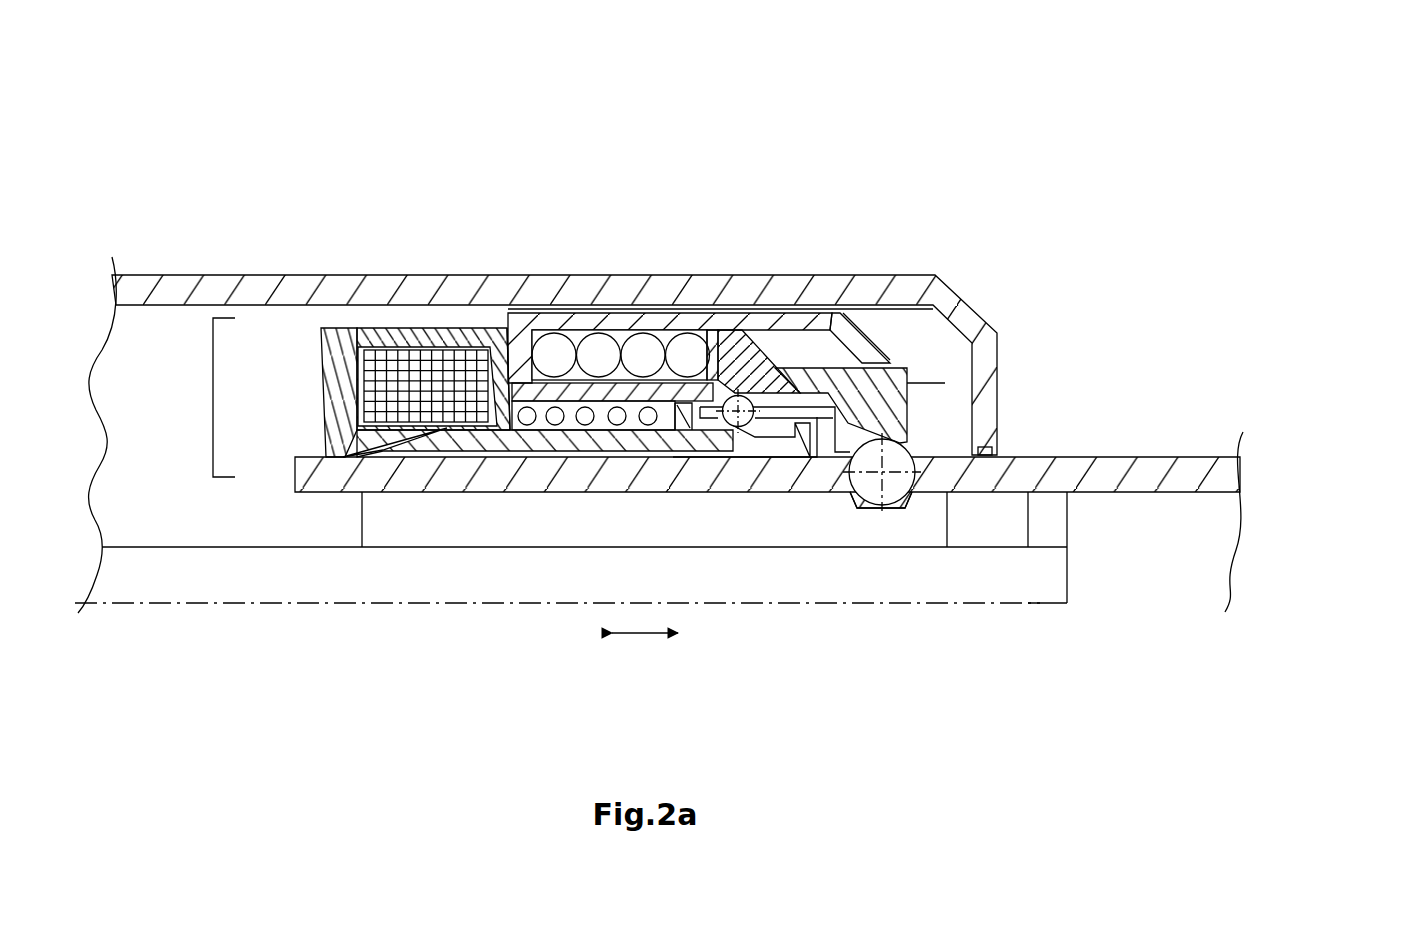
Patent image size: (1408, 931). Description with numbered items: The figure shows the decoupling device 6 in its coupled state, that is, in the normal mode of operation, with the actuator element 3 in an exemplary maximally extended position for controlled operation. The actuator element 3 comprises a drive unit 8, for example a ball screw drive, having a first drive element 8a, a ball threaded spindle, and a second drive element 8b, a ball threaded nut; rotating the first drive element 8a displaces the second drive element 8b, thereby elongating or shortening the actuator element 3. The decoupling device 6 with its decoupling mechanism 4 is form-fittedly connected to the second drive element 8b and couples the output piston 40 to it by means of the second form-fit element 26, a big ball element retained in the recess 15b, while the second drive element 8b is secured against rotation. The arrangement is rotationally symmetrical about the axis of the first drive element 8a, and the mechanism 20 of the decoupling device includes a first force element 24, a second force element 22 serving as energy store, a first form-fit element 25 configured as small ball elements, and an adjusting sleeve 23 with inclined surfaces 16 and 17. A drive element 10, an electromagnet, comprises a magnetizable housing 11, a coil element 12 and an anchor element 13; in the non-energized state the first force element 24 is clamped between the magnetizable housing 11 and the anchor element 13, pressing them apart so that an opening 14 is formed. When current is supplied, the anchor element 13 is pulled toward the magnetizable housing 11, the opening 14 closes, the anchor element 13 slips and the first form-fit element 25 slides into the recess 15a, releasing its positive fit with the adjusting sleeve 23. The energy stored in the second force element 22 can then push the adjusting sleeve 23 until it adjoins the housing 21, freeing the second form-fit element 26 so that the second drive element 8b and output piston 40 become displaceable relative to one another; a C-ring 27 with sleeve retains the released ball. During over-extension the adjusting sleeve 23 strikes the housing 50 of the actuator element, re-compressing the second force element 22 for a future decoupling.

The actuator element 3 is at (1278, 528).
The decoupling mechanism 4 is at (213, 397).
The decoupling device 6 is at (990, 125).
The drive unit 8 is at (466, 612).
The first drive element 8a is at (292, 590).
The second drive element 8b is at (603, 530).
The drive element 10 is at (479, 446).
The magnetizable housing 11 is at (363, 328).
The coil element 12 is at (445, 355).
The anchor element 13 is at (505, 340).
The opening 14 is at (417, 455).
The recess 15a is at (783, 430).
The recess 15b is at (872, 510).
The inclined surface 16 is at (945, 383).
The inclined surface 17 is at (733, 348).
The mechanism of the decoupling device 20 is at (882, 332).
The housing 21 is at (586, 318).
The second force element 22 is at (645, 352).
The adjusting sleeve 23 is at (738, 395).
The first force element 24 is at (651, 422).
The first form-fit element 25 is at (740, 426).
The second form-fit element 26 is at (899, 490).
The C-ring with sleeve 27 is at (947, 490).
The output piston 40 is at (1093, 467).
The housing 50 is at (955, 317).